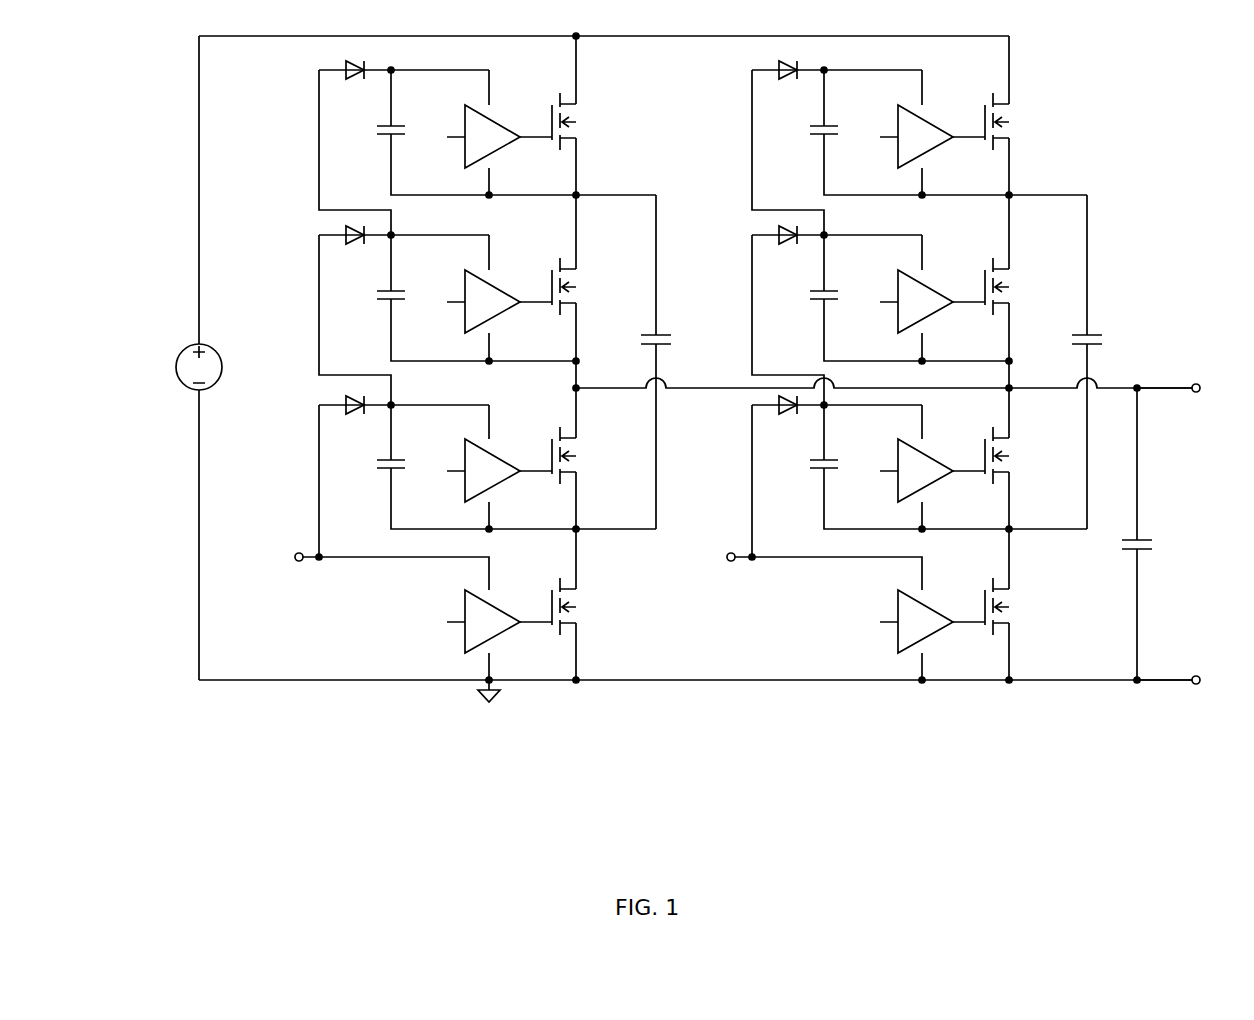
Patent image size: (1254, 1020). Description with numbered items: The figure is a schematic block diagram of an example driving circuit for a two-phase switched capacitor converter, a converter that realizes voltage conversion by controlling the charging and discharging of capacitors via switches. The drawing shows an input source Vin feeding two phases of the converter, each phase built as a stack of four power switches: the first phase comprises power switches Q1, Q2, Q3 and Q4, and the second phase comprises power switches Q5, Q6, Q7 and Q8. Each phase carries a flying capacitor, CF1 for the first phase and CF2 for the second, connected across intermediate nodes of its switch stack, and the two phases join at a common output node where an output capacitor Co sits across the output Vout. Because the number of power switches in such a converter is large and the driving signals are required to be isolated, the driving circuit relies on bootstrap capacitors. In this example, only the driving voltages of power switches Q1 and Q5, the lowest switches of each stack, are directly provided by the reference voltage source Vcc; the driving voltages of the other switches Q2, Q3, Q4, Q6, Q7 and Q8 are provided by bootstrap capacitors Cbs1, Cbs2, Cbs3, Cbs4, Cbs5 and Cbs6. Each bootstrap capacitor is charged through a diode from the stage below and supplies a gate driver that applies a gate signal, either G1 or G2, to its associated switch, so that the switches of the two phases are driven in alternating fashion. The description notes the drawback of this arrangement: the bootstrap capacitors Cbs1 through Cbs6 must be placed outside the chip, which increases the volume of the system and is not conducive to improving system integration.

The input voltage source Vin is at (215, 358).
The power switch Q1 is at (566, 606).
The power switch Q2 is at (566, 455).
The power switch Q3 is at (566, 286).
The power switch Q4 is at (566, 121).
The power switch Q5 is at (999, 606).
The power switch Q6 is at (999, 455).
The power switch Q7 is at (999, 286).
The power switch Q8 is at (999, 121).
The bootstrap capacitor Cbs1 is at (366, 439).
The bootstrap capacitor Cbs2 is at (366, 269).
The bootstrap capacitor Cbs3 is at (366, 104).
The bootstrap capacitor Cbs4 is at (799, 439).
The bootstrap capacitor Cbs5 is at (799, 269).
The bootstrap capacitor Cbs6 is at (799, 104).
The flying capacitor CF1 is at (637, 362).
The flying capacitor CF2 is at (1068, 362).
The output capacitor Co is at (1152, 534).
The output voltage terminal Vout is at (1180, 534).
The reference voltage source Vcc is at (589, 568).
The gate driver with first gate signal G1 is at (685, 379).
The gate driver with second gate signal G2 is at (685, 379).